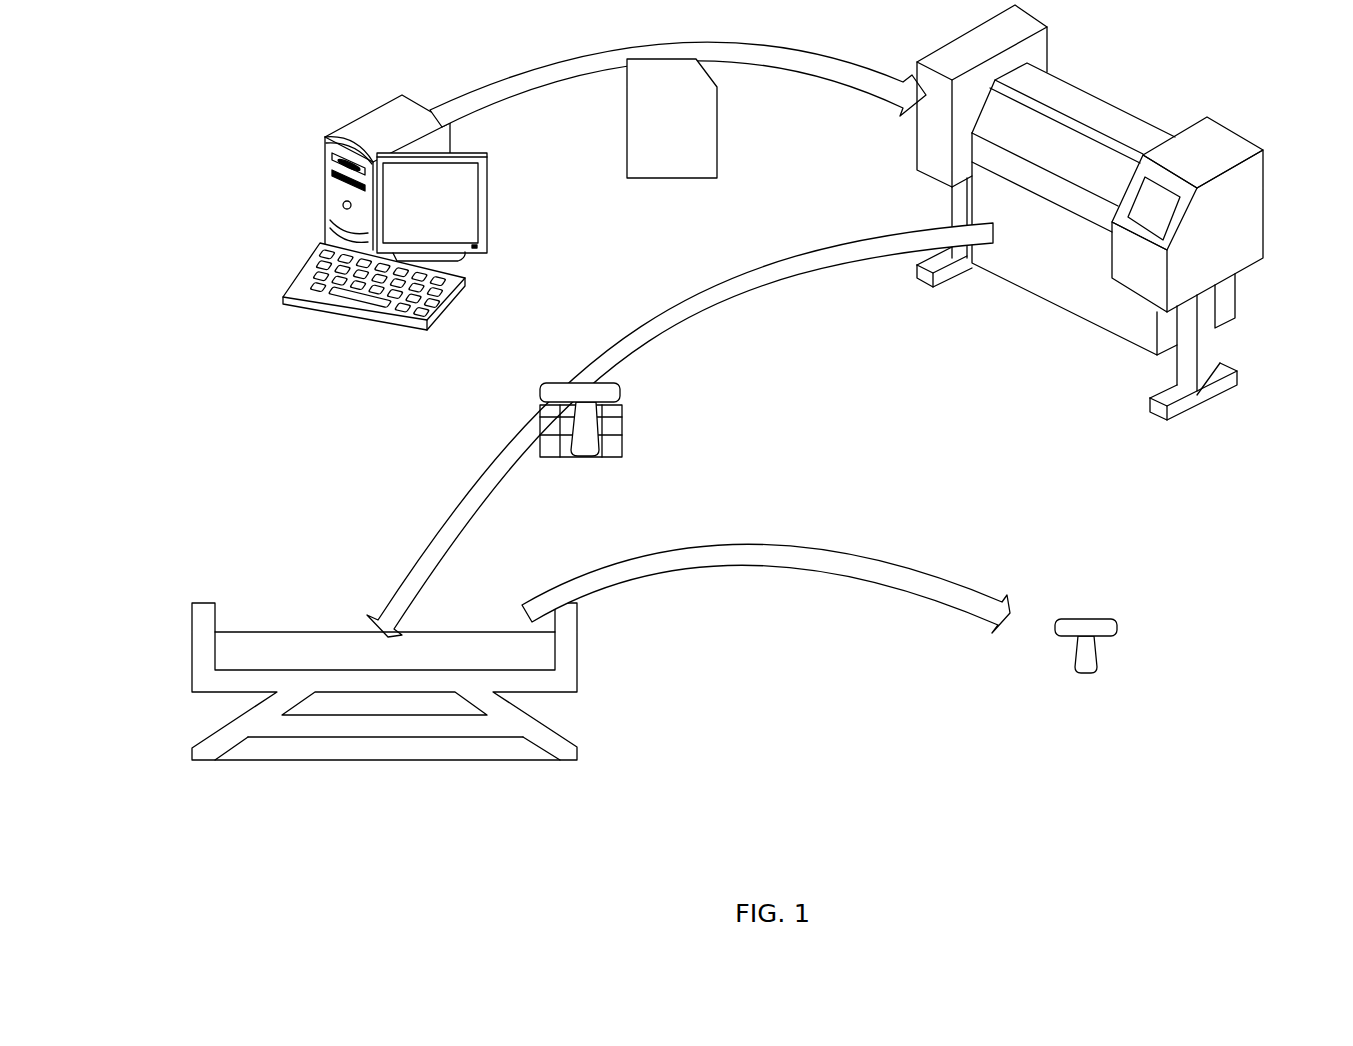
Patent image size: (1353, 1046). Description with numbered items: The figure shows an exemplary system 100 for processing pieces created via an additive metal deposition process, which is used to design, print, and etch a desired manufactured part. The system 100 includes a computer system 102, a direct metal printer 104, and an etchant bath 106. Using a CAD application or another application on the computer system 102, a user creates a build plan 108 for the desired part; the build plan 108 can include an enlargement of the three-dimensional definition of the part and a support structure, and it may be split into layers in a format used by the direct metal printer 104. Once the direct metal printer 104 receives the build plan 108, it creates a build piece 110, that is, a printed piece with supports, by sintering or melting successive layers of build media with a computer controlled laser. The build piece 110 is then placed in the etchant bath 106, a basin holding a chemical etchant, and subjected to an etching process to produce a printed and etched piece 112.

The system 100 is at (192, 64).
The computer system 102 is at (350, 123).
The direct metal printer 104 is at (1093, 99).
The etchant bath 106 is at (192, 603).
The build plan 108 is at (717, 140).
The build piece 110 is at (622, 407).
The printed and etched piece 112 is at (1117, 630).